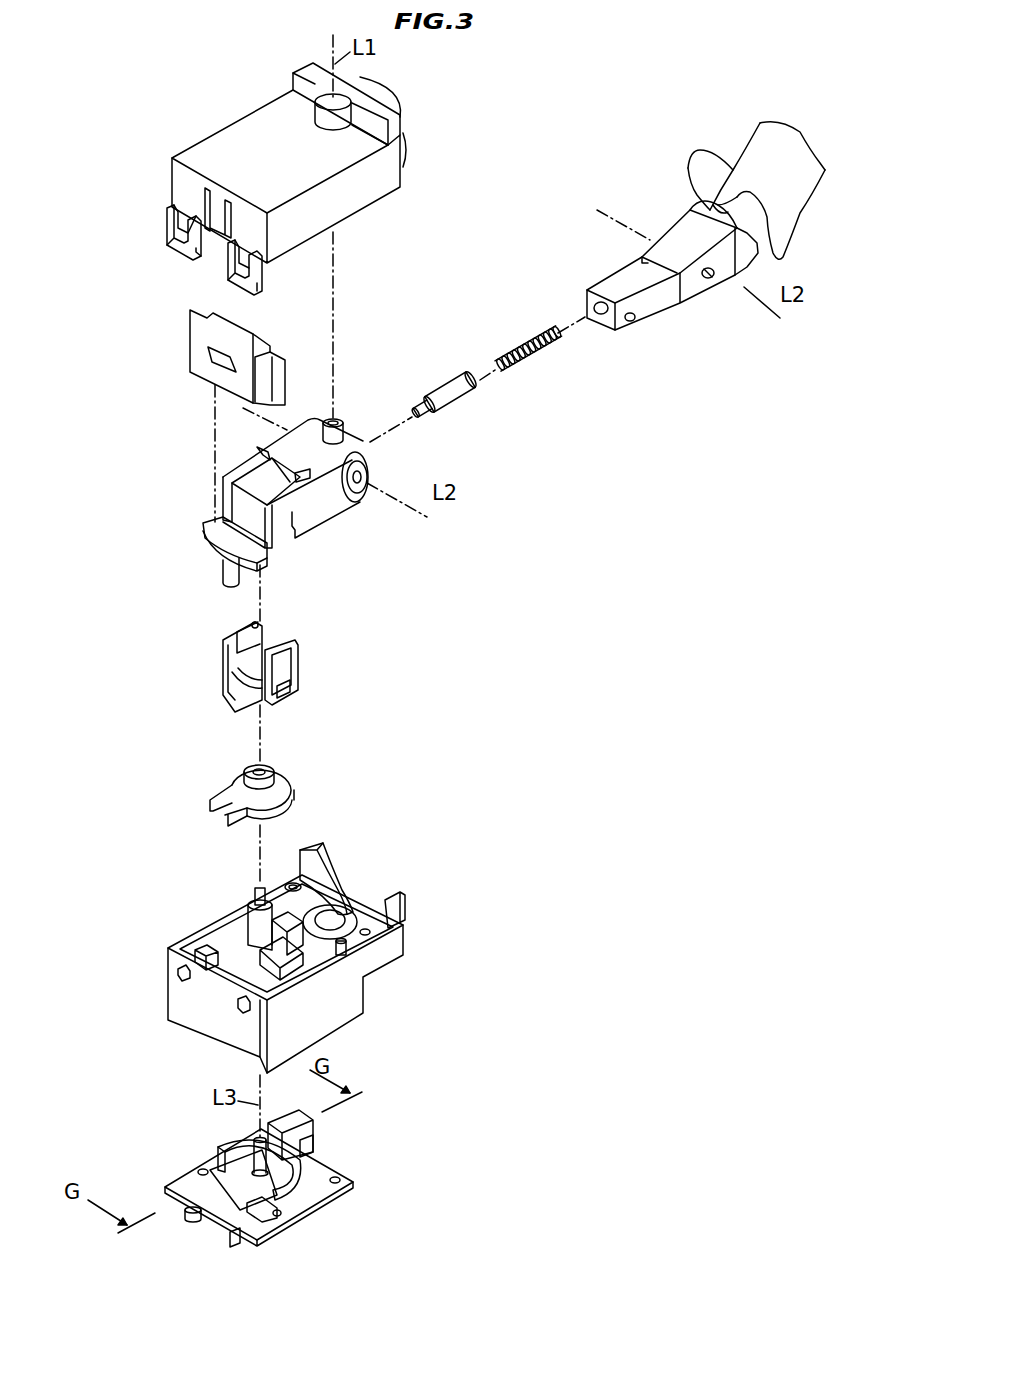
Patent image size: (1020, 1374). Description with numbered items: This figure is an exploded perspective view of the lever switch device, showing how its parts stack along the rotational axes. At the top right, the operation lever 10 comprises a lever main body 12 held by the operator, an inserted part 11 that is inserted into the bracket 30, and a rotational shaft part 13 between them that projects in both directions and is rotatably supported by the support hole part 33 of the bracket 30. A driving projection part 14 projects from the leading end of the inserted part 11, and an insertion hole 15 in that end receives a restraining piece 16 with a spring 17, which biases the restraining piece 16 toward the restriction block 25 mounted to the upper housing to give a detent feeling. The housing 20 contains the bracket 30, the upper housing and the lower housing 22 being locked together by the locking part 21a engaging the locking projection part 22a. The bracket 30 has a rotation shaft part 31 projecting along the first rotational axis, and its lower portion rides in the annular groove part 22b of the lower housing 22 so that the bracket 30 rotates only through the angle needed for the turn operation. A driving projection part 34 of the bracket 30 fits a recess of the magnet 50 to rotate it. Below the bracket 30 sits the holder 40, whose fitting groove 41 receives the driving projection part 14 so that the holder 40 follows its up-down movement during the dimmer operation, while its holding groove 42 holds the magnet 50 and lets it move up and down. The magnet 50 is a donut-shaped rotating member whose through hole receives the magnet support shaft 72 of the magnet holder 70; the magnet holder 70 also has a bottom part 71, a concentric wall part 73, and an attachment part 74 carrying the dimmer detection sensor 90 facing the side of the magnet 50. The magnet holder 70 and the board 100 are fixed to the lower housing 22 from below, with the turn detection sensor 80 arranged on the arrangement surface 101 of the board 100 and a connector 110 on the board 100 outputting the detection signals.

The operation lever 10 is at (661, 284).
The inserted part 11 is at (677, 243).
The lever main body 12 is at (790, 182).
The rotational shaft part 13 is at (709, 278).
The driving projection part 14 is at (631, 322).
The insertion hole 15 is at (601, 310).
The restraining piece 16 is at (455, 402).
The spring 17 is at (532, 357).
The housing 20 is at (210, 134).
The locking part 21a is at (230, 278).
The lower housing 22 is at (288, 957).
The locking projection part 22a is at (238, 1004).
The annular groove part 22b is at (325, 893).
The restriction block 25 is at (190, 334).
The bracket 30 is at (292, 488).
The rotation shaft part 31 is at (338, 418).
The support hole part 33 is at (362, 474).
The driving projection part 34 is at (230, 576).
The holder 40 is at (320, 656).
The fitting groove 41 is at (258, 638).
The holding groove 42 is at (270, 698).
The magnet 50 is at (294, 792).
The magnet holder 70 is at (330, 1191).
The bottom part 71 is at (190, 1218).
The magnet support shaft 72 is at (257, 1148).
The wall part 73 is at (288, 1193).
The attachment part 74 is at (335, 1120).
The turn detection sensor 80 is at (272, 1215).
The dimmer detection sensor 90 is at (310, 1142).
The board 100 is at (319, 1187).
The arrangement surface 101 is at (308, 1190).
The connector 110 is at (233, 1240).